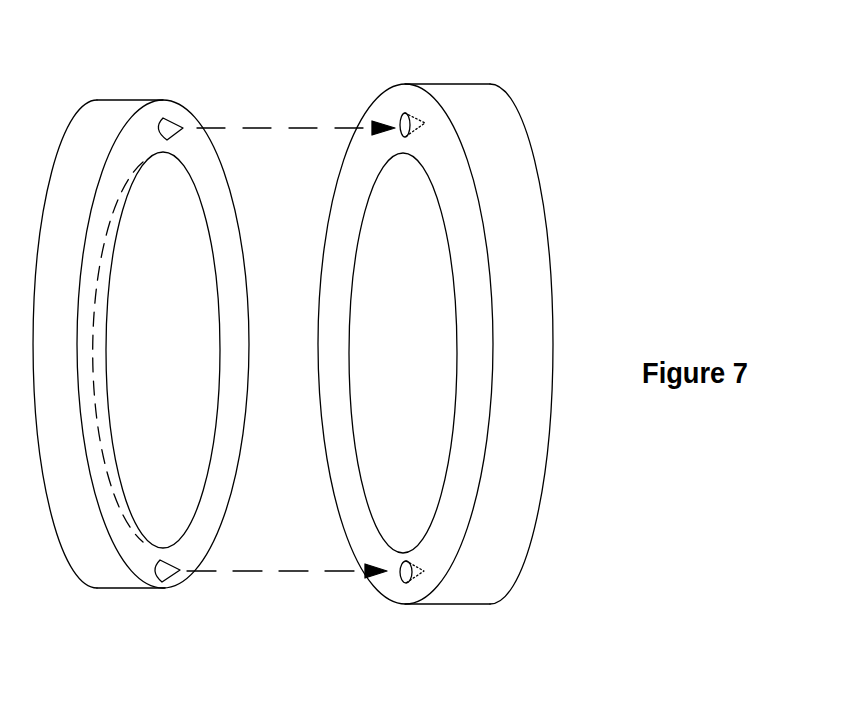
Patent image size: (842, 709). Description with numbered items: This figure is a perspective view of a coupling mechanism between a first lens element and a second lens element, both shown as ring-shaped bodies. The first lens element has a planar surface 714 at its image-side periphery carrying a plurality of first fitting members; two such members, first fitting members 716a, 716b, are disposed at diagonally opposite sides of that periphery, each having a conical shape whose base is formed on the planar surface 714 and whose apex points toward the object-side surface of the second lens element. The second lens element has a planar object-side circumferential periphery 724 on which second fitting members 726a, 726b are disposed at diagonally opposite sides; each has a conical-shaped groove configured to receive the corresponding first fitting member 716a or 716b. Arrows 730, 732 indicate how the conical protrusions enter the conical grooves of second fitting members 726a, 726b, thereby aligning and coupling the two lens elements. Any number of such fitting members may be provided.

The planar surface 714 is at (216, 207).
The first fitting member 716a is at (178, 117).
The first fitting member 716b is at (167, 582).
The object-side circumferential periphery 724 is at (345, 448).
The second fitting member 726a is at (405, 113).
The second fitting member 726b is at (403, 584).
The arrow 730 is at (296, 120).
The arrow 732 is at (287, 562).